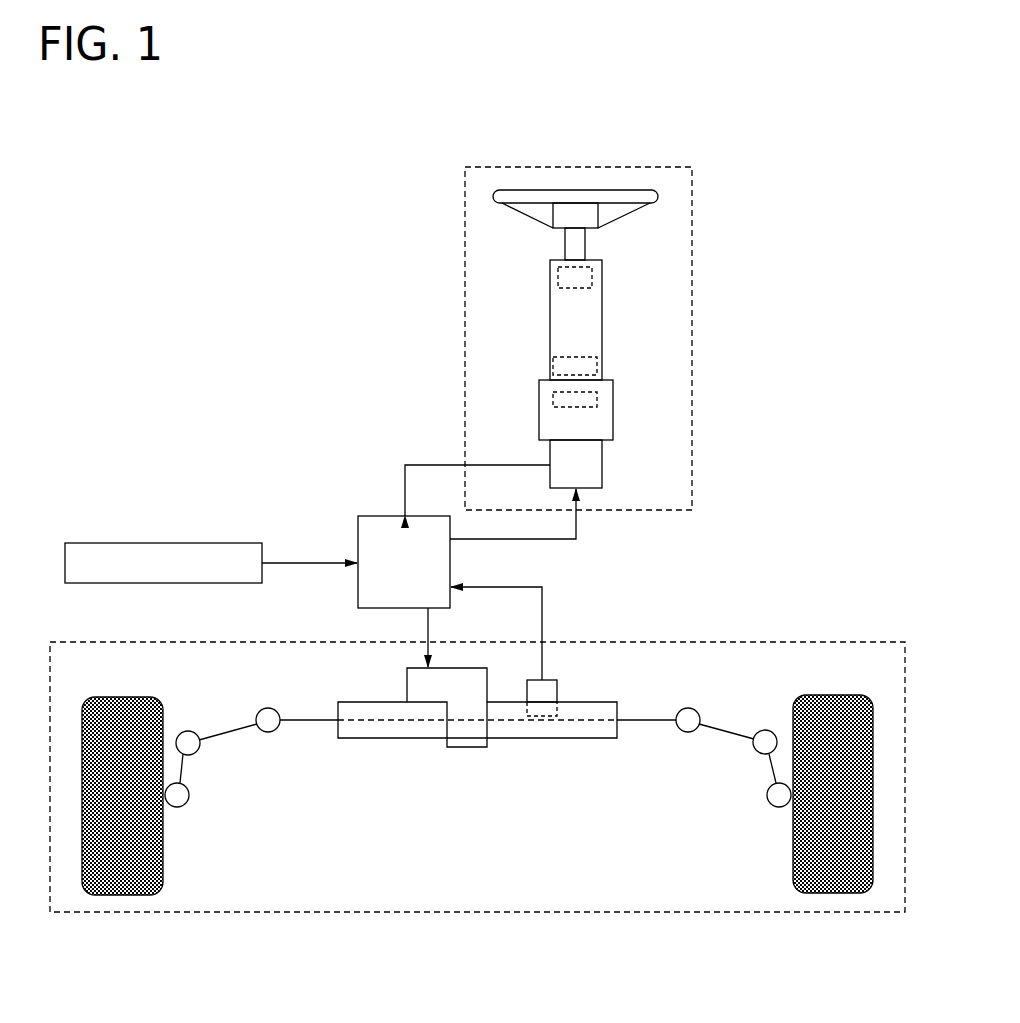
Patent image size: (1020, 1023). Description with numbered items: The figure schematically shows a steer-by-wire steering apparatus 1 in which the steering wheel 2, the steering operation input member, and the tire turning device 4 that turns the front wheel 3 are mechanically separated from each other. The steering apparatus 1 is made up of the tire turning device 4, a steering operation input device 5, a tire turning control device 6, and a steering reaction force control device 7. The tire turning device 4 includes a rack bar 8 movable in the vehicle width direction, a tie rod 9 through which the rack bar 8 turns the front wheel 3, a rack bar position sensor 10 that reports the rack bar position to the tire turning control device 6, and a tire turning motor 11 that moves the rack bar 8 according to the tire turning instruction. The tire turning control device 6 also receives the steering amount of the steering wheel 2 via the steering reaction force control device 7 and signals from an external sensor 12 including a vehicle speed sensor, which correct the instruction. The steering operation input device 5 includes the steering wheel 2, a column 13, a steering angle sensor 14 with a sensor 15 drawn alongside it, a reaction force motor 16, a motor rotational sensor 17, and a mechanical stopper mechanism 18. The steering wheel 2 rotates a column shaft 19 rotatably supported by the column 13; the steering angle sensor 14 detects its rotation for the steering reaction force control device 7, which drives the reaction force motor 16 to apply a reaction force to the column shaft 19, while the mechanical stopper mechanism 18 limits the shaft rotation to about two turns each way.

The steering apparatus 1 is at (752, 215).
The steering wheel 2 is at (636, 190).
The front wheel 3 is at (120, 697).
The tire turning device 4 is at (803, 641).
The steering operation input device 5 is at (462, 252).
The tire turning control device 6 is at (367, 514).
The steering reaction force control device 7 is at (604, 467).
The rack bar 8 is at (312, 722).
The tie rod 9 is at (236, 731).
The rack bar position sensor 10 is at (558, 692).
The tire turning motor 11 is at (468, 748).
The external sensor 12 is at (157, 543).
The column 13 is at (548, 324).
The steering angle sensor 14 is at (668, 261).
The steering angle sensor 15 is at (592, 283).
The reaction force motor 16 is at (615, 408).
The motor rotational sensor 17 is at (553, 407).
The mechanical stopper mechanism 18 is at (603, 367).
The column shaft 19 is at (563, 243).